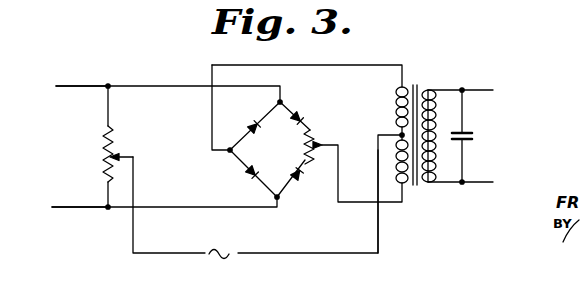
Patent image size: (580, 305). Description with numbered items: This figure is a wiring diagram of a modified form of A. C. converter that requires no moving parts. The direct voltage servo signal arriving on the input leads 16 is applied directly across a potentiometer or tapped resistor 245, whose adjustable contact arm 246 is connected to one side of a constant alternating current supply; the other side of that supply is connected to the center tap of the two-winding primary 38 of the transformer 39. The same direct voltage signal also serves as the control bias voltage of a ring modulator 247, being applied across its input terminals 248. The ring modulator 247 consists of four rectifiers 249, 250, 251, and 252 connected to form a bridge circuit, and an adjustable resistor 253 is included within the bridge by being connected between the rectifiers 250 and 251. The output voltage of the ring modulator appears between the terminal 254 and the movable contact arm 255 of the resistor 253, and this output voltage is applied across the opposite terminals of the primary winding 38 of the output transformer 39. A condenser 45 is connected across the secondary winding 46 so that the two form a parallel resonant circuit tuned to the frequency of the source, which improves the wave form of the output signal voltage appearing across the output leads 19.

The input terminal 16 is at (76, 85).
The potentiometer or tapped resistor 245 is at (102, 151).
The adjustable contact arm 246 is at (124, 156).
The ring modulator 247 is at (292, 155).
The input terminal 248 is at (282, 103).
The rectifier 249 is at (250, 123).
The rectifier 250 is at (306, 122).
The rectifier 251 is at (300, 178).
The rectifier 252 is at (246, 178).
The adjustable resistor 253 is at (318, 144).
The terminal 254 is at (230, 152).
The movable contact arm 255 is at (342, 146).
The primary winding 38 is at (402, 135).
The transformer 39 is at (444, 73).
The secondary winding 46 is at (435, 160).
The condenser 45 is at (471, 134).
The lead 19 is at (482, 91).